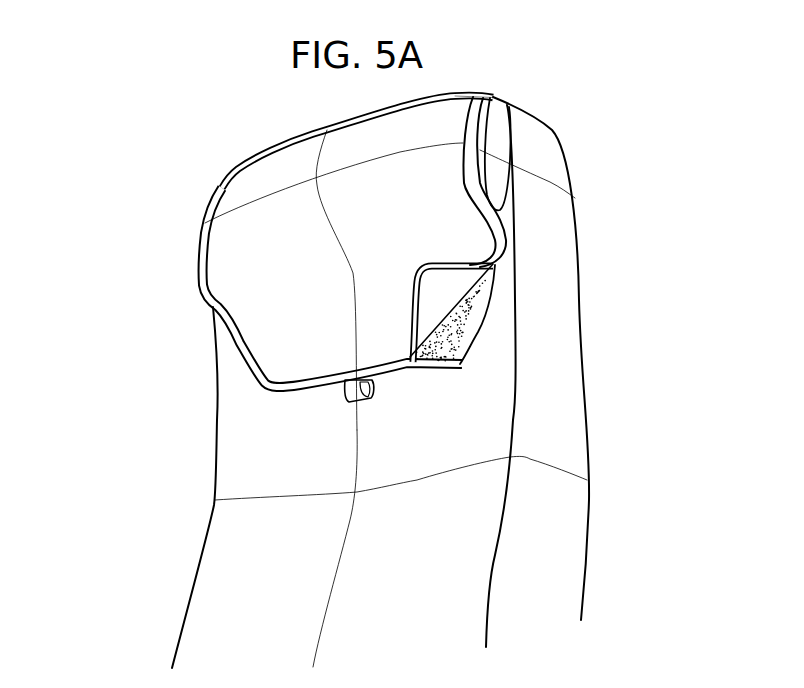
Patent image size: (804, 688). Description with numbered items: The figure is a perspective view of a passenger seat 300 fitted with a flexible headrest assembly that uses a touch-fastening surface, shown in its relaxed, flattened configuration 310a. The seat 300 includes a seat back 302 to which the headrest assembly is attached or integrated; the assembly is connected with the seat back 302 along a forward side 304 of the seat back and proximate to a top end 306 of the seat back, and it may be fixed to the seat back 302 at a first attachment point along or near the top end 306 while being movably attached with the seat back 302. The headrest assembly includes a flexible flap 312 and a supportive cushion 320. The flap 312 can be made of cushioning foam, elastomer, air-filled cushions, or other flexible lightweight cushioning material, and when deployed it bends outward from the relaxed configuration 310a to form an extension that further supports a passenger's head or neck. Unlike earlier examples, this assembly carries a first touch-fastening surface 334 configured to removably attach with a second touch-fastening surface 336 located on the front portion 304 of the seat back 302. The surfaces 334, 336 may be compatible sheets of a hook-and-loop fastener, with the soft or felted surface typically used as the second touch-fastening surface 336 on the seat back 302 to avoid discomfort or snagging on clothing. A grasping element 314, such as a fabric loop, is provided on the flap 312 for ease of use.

The passenger seat 300 is at (361, 351).
The seat back 302 is at (414, 382).
The forward side of the seat back 304 is at (436, 520).
The top end of the seat back 306 is at (533, 117).
The relaxed configuration 310a is at (500, 98).
The flap 312 is at (377, 263).
The grasping element 314 is at (345, 390).
The supportive cushion 320 is at (505, 147).
The first touch-fastening surface 334 is at (437, 311).
The second touch-fastening surface 336 is at (438, 352).